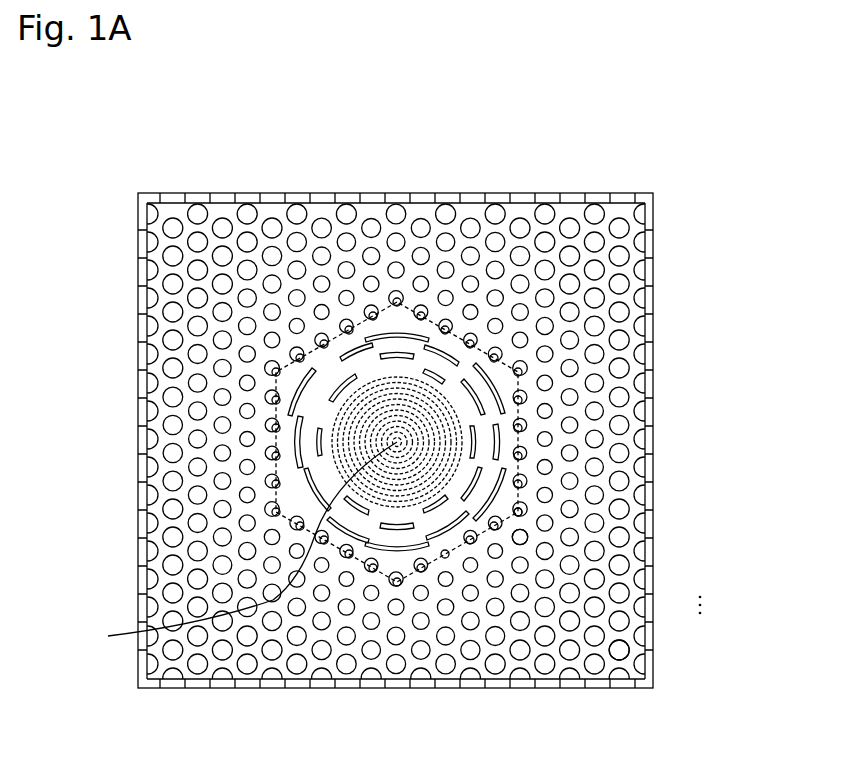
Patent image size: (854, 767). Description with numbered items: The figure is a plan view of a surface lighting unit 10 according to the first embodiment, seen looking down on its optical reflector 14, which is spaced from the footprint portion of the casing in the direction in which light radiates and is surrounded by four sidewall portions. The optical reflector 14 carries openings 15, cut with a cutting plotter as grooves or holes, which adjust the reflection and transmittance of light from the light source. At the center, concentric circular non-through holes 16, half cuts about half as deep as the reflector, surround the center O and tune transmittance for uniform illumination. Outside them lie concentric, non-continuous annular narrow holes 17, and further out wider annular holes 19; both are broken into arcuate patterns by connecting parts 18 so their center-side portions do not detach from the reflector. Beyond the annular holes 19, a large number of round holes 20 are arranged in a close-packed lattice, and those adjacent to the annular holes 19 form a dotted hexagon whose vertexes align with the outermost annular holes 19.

The surface lighting unit 10 is at (636, 118).
The optical reflector 14 is at (624, 268).
The openings 15 is at (441, 428).
The concentric circular non-through holes 16 is at (415, 440).
The annular narrow holes 17 is at (442, 449).
The connecting parts 18 is at (434, 367).
The annular holes 19 is at (505, 463).
The round holes 20 is at (716, 518).